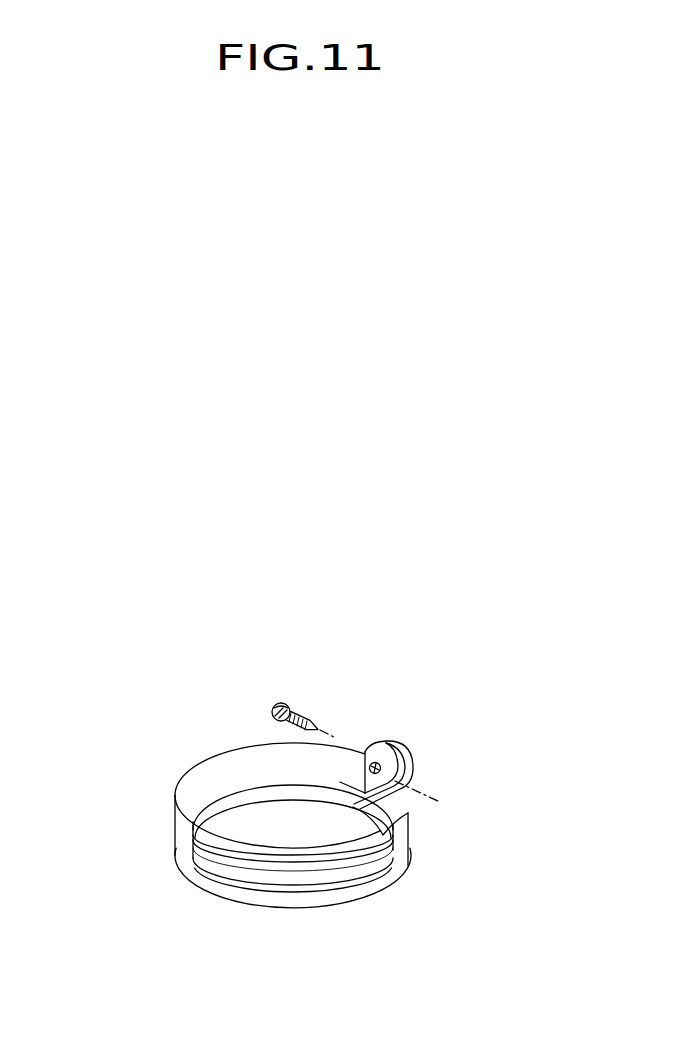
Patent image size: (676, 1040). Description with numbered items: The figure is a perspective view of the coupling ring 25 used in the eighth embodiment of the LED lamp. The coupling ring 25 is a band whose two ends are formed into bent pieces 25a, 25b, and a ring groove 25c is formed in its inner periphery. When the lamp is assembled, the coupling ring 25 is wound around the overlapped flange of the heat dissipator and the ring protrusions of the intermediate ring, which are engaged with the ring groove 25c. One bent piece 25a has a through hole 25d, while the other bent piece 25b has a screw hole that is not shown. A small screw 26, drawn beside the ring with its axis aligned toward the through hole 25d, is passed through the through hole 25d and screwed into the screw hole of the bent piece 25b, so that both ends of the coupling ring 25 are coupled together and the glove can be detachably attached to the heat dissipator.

The coupling ring 25 is at (187, 800).
The bent piece 25a is at (385, 753).
The bent piece 25b is at (413, 767).
The ring groove 25c is at (270, 873).
The through hole 25d is at (375, 763).
The small screw 26 is at (285, 702).